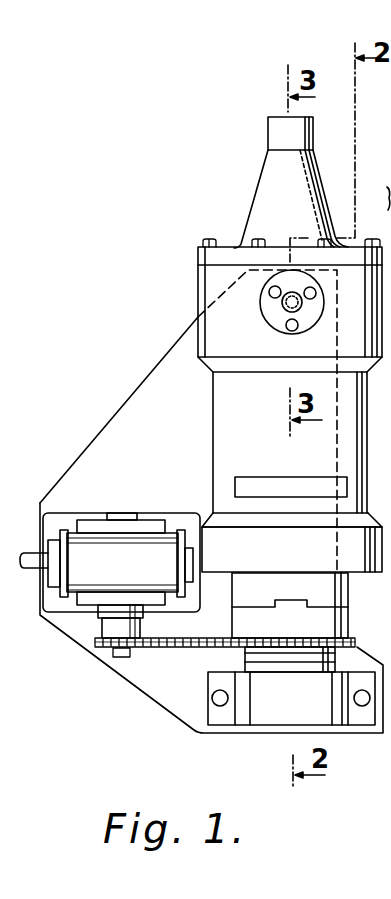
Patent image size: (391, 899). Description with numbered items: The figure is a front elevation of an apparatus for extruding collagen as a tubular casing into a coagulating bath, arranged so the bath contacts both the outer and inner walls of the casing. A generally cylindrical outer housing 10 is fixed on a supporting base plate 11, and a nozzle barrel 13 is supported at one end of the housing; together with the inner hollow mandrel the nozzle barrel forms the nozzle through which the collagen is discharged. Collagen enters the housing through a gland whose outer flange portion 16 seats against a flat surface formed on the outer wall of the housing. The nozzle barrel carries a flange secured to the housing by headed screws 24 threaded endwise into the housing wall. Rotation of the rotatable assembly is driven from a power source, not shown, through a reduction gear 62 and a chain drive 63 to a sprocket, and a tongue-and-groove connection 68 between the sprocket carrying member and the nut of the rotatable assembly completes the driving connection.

The outer housing 10 is at (205, 369).
The supporting base plate 11 is at (137, 677).
The nozzle barrel 13 is at (265, 191).
The outer flange portion 16 is at (385, 173).
The headed screws 24 is at (206, 238).
The reduction gear 62 is at (90, 570).
The chain drive 63 is at (176, 647).
The tongue-and-groove connection 68 is at (294, 605).